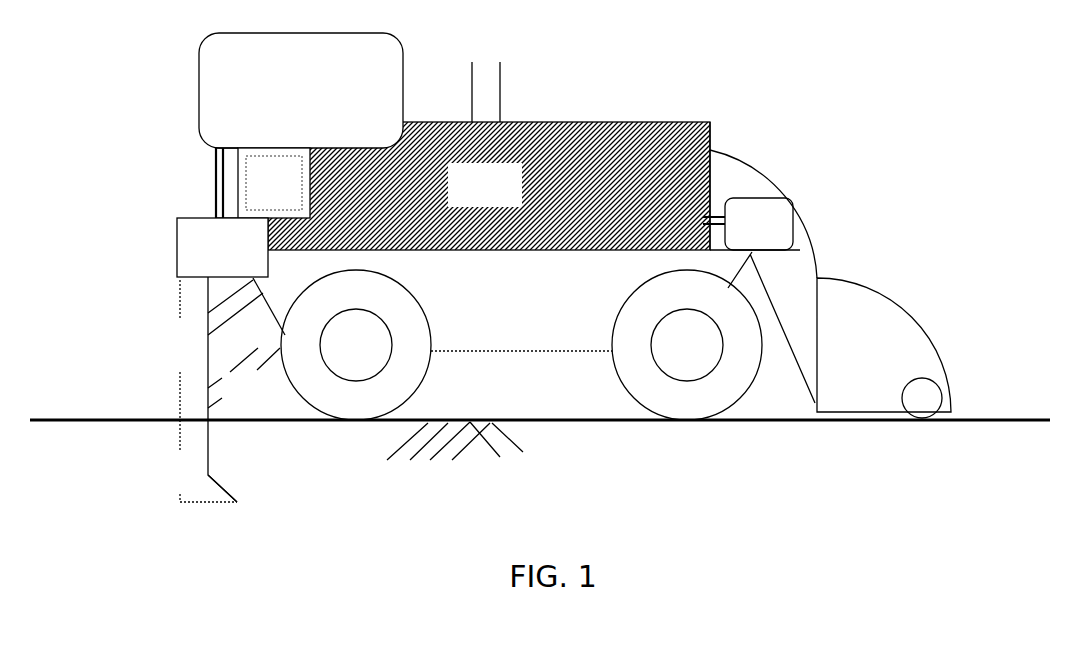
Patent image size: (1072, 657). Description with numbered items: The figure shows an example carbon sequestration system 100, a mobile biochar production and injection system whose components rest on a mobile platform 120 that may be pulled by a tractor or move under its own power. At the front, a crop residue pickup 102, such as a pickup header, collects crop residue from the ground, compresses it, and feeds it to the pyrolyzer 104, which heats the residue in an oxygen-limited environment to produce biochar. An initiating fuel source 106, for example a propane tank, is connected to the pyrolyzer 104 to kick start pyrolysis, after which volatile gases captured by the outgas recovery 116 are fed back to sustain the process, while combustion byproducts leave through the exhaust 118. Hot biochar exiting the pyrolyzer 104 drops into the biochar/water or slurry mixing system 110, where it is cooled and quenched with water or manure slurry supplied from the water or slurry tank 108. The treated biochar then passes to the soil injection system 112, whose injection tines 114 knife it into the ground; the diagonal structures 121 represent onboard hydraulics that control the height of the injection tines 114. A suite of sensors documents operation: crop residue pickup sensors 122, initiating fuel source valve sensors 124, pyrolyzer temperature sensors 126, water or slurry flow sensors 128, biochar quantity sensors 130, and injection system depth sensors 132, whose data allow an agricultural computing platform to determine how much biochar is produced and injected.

The carbon sequestration system 100 is at (559, 265).
The crop residue pickup 102 is at (884, 348).
The pyrolyzer 104 is at (486, 186).
The initiating fuel source 106 is at (759, 224).
The water or slurry tank 108 is at (301, 90).
The biochar/water or slurry mixing system 110 is at (222, 247).
The soil injection system 112 is at (184, 389).
The injection tines 114 is at (194, 483).
The outgas recovery 116 is at (274, 183).
The exhaust 118 is at (486, 75).
The mobile platform 120 is at (521, 345).
The diagonal structures 121 is at (246, 343).
The crop residue pickup sensors 122 is at (794, 291).
The initiating fuel source valve sensors 124 is at (722, 217).
The pyrolyzer temperature sensors 126 is at (577, 147).
The water or slurry flow sensors 128 is at (218, 173).
The biochar quantity sensors 130 is at (235, 230).
The injection system depth sensors 132 is at (274, 287).